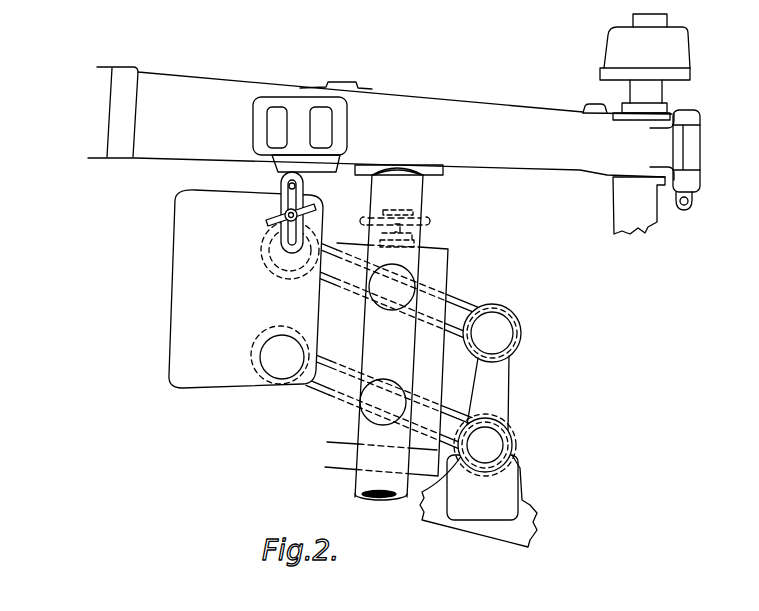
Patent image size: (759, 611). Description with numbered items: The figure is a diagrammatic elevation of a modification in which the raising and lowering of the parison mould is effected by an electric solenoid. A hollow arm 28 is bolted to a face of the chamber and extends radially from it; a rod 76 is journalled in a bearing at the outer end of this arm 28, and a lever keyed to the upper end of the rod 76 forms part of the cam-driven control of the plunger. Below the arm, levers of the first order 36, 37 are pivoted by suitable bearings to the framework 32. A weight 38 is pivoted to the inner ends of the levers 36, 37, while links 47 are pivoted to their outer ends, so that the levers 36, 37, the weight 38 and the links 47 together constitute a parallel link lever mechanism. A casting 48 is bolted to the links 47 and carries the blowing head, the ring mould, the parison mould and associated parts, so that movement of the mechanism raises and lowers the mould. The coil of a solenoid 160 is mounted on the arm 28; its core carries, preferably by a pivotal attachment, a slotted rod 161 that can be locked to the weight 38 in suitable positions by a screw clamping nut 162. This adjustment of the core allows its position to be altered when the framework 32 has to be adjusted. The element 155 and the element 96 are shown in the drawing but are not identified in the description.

The hollow arm 28 is at (418, 107).
The cap 155 is at (645, 67).
The rod 76 is at (688, 153).
The plate 96 is at (620, 203).
The coil of a solenoid 160 is at (303, 103).
The slotted rod 161 is at (283, 190).
The screw clamping nut 162 is at (308, 203).
The weight 38 is at (246, 289).
The framework 32 is at (386, 359).
The lever of the first order 36 is at (462, 298).
The lever of the first order 37 is at (315, 398).
The link 47 is at (500, 398).
The casting 48 is at (532, 507).